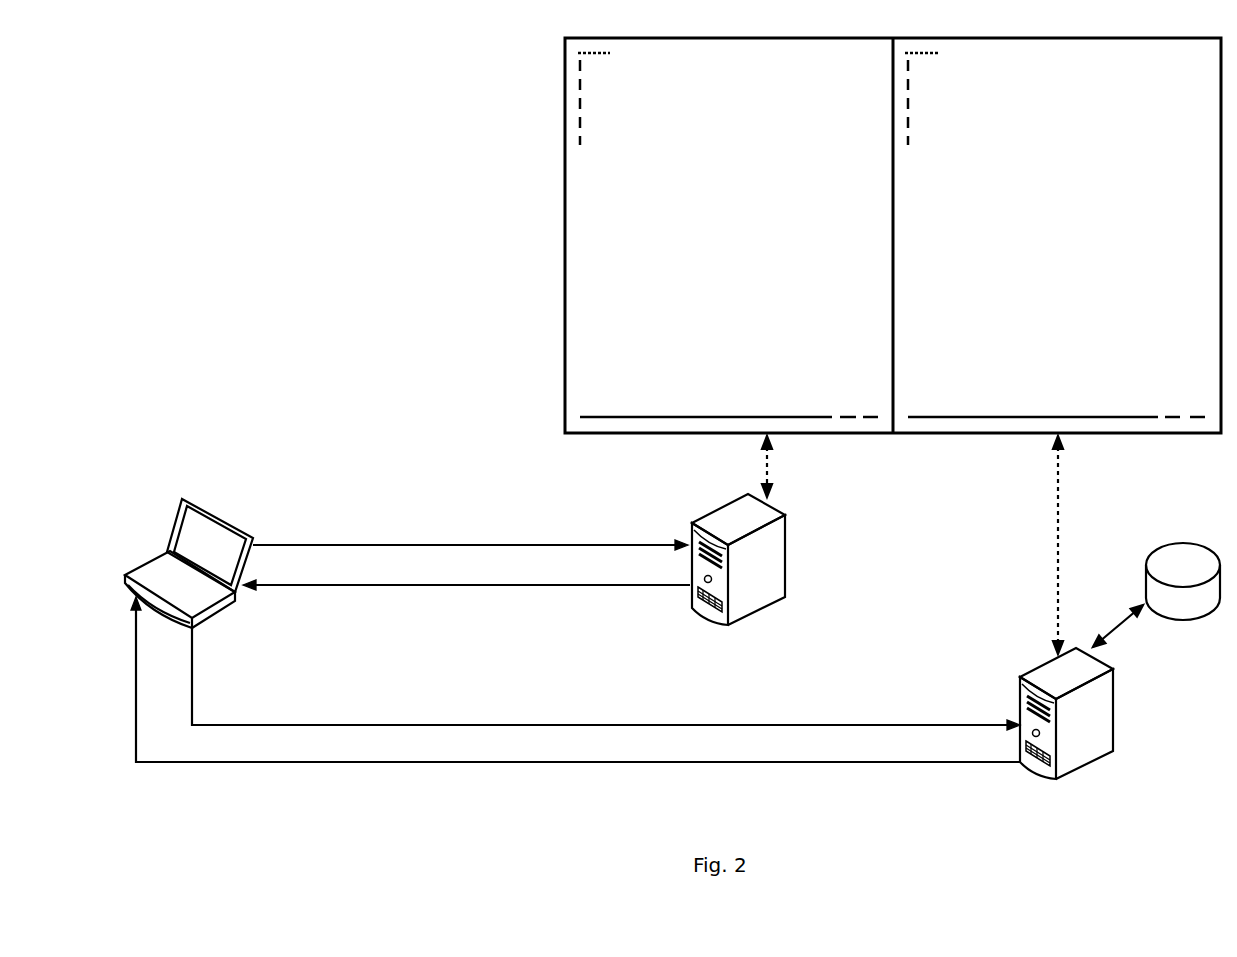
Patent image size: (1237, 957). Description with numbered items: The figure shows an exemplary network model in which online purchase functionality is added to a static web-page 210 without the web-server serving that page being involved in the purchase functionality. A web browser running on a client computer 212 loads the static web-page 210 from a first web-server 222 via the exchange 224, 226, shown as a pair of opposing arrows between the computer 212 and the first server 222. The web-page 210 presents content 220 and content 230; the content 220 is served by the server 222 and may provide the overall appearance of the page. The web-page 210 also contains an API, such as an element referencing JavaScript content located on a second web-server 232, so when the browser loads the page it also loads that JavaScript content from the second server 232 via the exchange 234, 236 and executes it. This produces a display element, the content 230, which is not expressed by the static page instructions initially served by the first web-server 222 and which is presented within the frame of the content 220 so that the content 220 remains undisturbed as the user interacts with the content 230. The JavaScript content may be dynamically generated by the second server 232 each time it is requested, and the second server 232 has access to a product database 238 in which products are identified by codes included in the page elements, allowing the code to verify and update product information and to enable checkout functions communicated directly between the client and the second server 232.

The web-page 210 is at (846, 235).
The computer 212 is at (189, 538).
The content 220 is at (728, 235).
The server 222 is at (778, 559).
The exchange 224 is at (470, 522).
The exchange 226 is at (466, 606).
The content 230 is at (1055, 235).
The second server 232 is at (1101, 713).
The exchange 234 is at (606, 678).
The exchange 236 is at (575, 697).
The product database 238 is at (1183, 565).